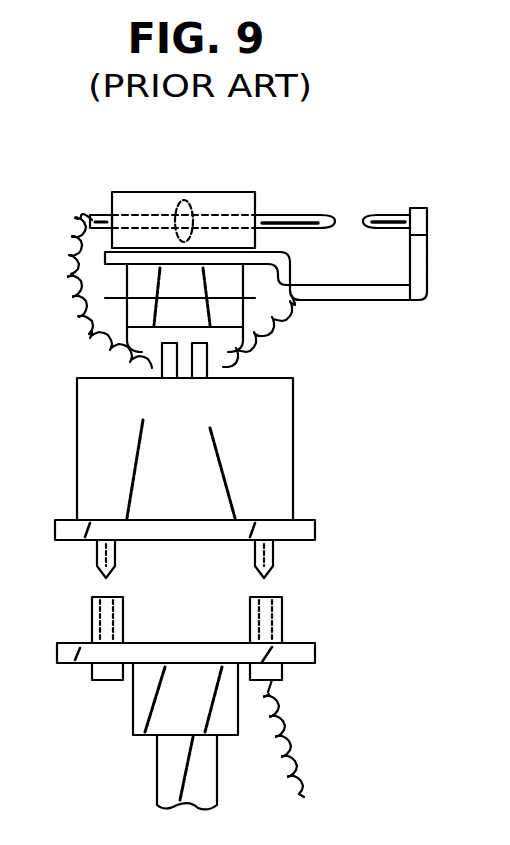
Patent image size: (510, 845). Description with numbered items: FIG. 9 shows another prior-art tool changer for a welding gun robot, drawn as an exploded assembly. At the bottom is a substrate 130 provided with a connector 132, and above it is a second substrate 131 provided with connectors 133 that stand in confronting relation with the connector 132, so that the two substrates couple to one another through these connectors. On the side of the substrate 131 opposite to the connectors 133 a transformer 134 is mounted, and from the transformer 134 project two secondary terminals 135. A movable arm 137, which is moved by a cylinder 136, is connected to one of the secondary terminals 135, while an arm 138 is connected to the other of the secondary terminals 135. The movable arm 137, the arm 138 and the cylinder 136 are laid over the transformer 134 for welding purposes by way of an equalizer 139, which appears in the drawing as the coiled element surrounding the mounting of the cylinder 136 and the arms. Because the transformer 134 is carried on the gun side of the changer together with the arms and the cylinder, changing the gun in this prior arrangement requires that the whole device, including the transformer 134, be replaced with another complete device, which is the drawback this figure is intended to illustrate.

The substrate 130 is at (313, 657).
The substrate 131 is at (303, 531).
The connector 132 is at (283, 615).
The connectors 133 is at (275, 552).
The transformer 134 is at (280, 447).
The secondary terminals 135 is at (197, 380).
The cylinder 136 is at (232, 197).
The movable arm 137 is at (92, 215).
The arm 138 is at (368, 300).
The equalizer 139 is at (135, 310).